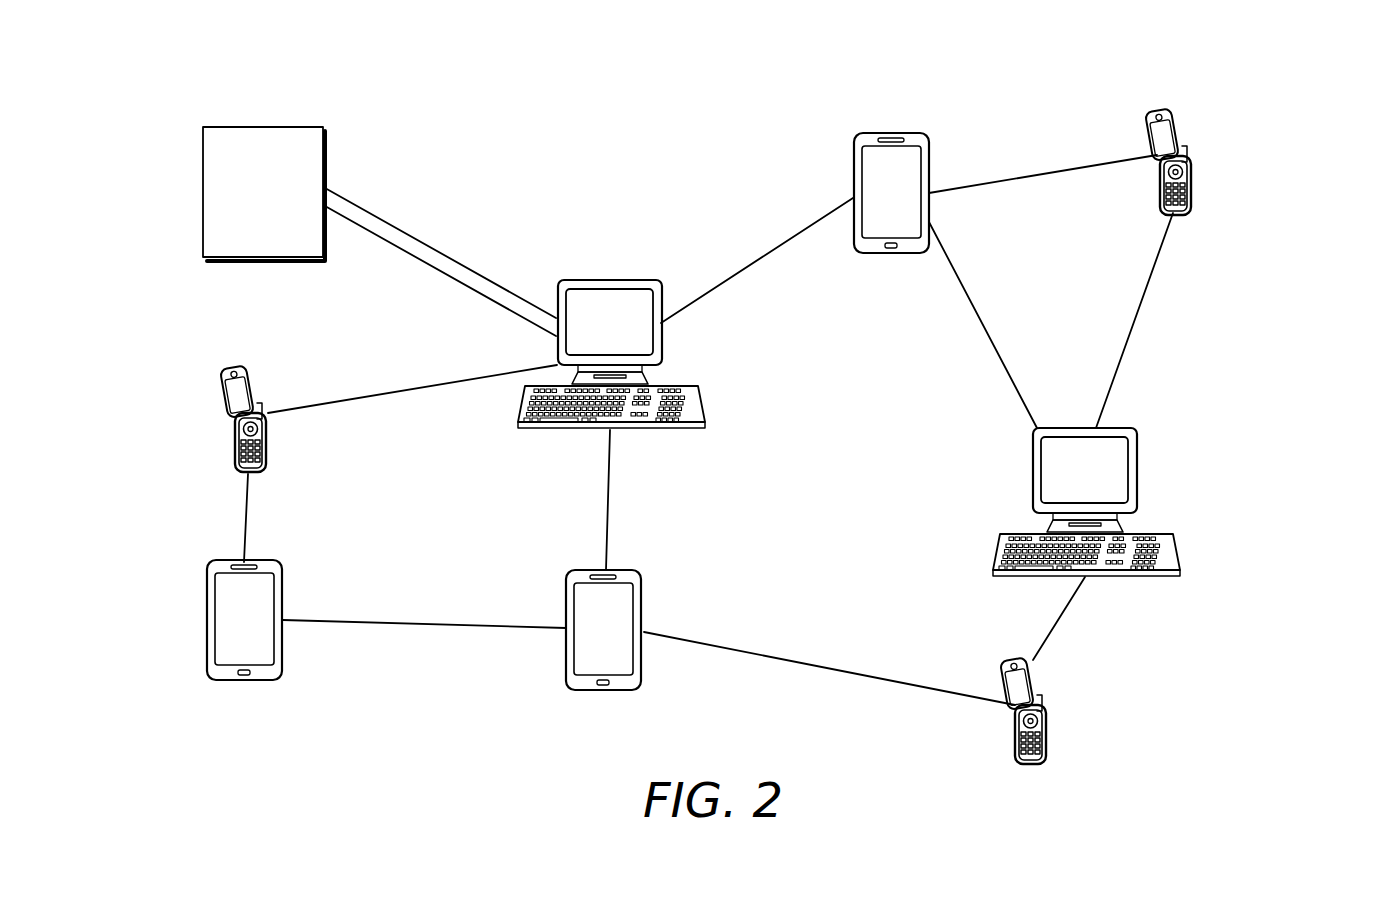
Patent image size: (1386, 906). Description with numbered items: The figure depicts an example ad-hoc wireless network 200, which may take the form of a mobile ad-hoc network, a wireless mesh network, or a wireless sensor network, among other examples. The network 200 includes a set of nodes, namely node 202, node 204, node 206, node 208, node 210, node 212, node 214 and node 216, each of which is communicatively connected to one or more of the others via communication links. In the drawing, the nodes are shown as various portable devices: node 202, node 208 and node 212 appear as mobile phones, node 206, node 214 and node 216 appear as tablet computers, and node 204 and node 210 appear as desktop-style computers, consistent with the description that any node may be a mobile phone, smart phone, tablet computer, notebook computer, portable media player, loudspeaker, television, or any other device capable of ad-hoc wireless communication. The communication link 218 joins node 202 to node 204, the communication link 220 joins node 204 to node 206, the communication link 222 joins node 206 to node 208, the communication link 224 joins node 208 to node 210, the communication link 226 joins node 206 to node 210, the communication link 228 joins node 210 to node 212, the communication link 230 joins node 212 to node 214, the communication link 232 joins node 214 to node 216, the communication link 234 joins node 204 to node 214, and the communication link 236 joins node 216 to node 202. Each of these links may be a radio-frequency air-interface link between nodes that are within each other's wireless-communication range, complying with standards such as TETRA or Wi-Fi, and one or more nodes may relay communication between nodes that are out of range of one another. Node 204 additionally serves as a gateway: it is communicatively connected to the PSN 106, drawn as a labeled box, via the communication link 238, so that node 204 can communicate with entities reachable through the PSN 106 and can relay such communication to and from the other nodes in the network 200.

The ad-hoc wireless network 200 is at (1258, 70).
The PSN 106 is at (213, 125).
The node 202 is at (233, 413).
The node 204 is at (609, 279).
The node 206 is at (891, 132).
The node 208 is at (1170, 108).
The node 210 is at (1138, 470).
The node 212 is at (1047, 710).
The node 214 is at (606, 692).
The node 216 is at (207, 620).
The communication link 218 is at (421, 396).
The communication link 220 is at (758, 253).
The communication link 222 is at (1042, 170).
The communication link 224 is at (1140, 315).
The communication link 226 is at (987, 323).
The communication link 228 is at (1066, 617).
The communication link 230 is at (832, 665).
The communication link 232 is at (430, 618).
The communication link 234 is at (612, 500).
The communication link 236 is at (244, 516).
The communication link 238 is at (445, 254).